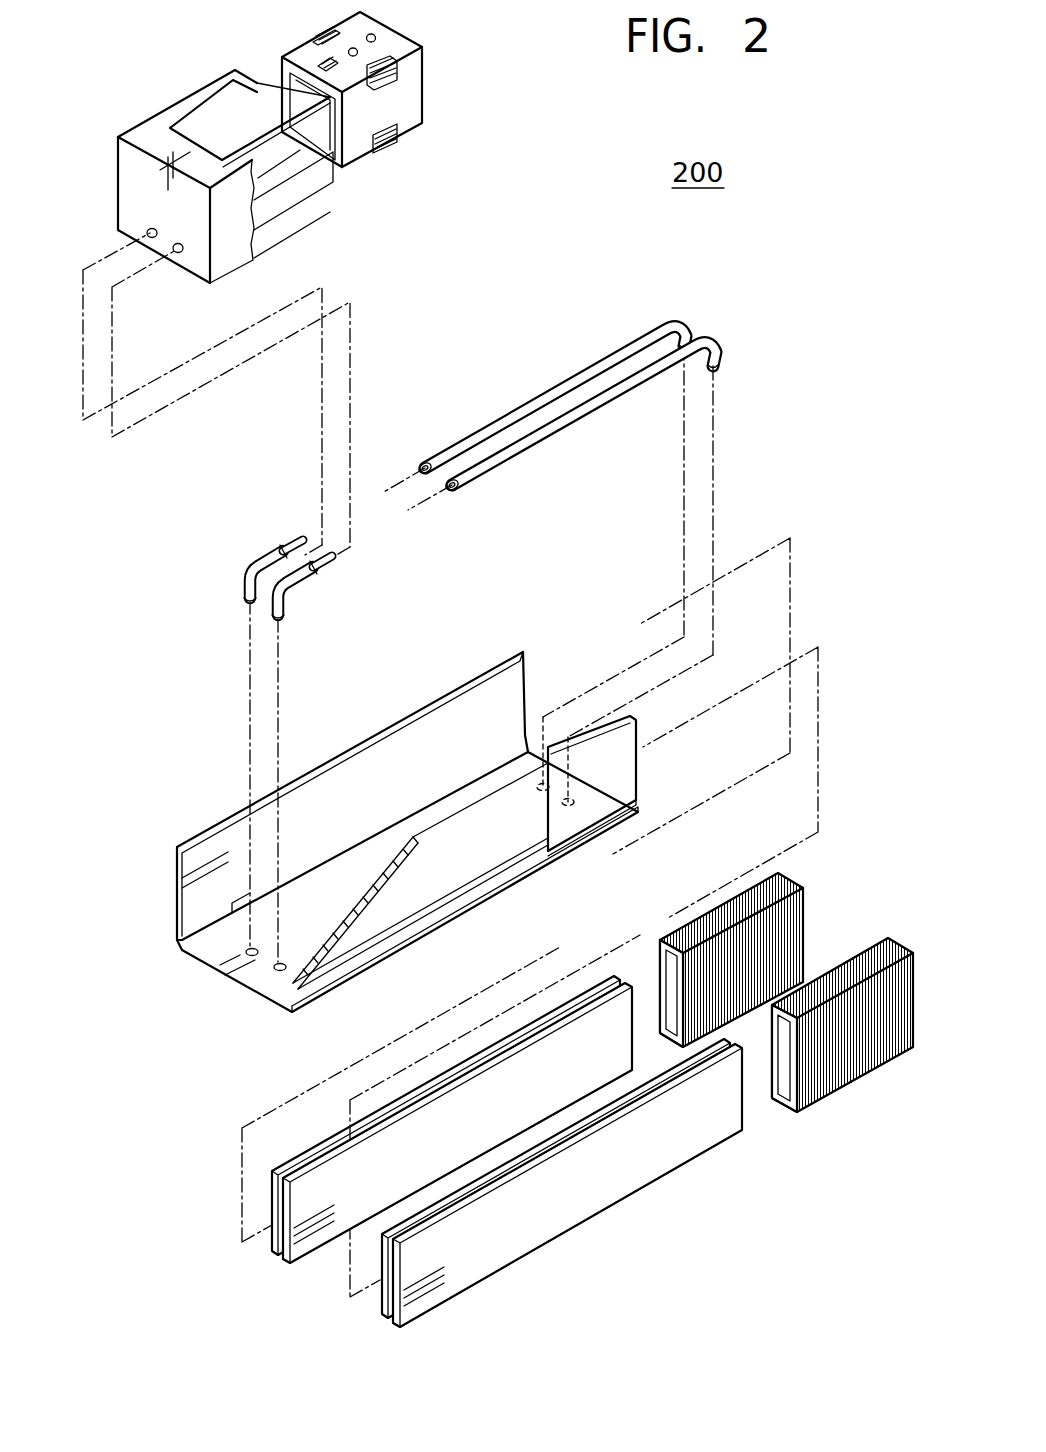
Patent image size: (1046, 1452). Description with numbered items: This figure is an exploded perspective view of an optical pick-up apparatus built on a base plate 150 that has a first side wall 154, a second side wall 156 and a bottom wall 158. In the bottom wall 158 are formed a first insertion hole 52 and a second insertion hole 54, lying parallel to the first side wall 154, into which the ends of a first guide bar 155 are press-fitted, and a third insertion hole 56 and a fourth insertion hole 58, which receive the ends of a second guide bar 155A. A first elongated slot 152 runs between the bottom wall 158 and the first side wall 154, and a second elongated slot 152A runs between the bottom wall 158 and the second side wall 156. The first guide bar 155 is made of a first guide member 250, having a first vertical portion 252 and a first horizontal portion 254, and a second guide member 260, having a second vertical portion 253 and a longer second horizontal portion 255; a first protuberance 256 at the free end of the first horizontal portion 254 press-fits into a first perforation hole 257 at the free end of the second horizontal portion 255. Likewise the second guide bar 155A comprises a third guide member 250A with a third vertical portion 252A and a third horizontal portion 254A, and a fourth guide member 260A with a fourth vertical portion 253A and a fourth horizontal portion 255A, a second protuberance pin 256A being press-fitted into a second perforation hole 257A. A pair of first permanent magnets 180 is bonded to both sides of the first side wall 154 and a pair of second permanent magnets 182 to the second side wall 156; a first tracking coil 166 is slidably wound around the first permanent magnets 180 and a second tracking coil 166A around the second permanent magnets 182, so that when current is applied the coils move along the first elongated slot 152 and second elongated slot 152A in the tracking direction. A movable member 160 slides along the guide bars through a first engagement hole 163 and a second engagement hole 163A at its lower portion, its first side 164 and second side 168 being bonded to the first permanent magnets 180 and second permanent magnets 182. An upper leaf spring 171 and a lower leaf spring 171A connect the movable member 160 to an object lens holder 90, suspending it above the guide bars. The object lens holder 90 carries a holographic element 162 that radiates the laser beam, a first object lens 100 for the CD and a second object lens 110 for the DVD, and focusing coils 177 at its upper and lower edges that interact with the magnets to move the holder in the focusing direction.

The object lens holder 90 is at (418, 104).
The first object lens 100 is at (358, 52).
The second object lens 110 is at (377, 38).
The holographic element 162 is at (324, 64).
The focusing coils 177 is at (392, 138).
The movable member 160 is at (215, 185).
The first side 164 is at (147, 110).
The upper leaf spring 171 is at (217, 130).
The lower leaf spring 171A is at (282, 172).
The second side 168 is at (238, 230).
The first engagement hole 163 is at (150, 233).
The second engagement hole 163A is at (178, 252).
The first guide bar 155 is at (410, 324).
The second guide bar 155A is at (639, 545).
The second guide member 260 is at (380, 343).
The fourth guide member 260A is at (655, 468).
The second vertical portion 253 is at (668, 335).
The fourth vertical portion 253A is at (690, 372).
The second horizontal portion 255 is at (535, 482).
The fourth horizontal portion 255A is at (563, 499).
The first perforation hole 257 is at (428, 460).
The second perforation hole 257A is at (468, 492).
The first guide member 250 is at (248, 488).
The third guide member 250A is at (417, 610).
The first vertical portion 252 is at (245, 588).
The third vertical portion 252A is at (282, 608).
The first horizontal portion 254 is at (262, 560).
The third horizontal portion 254A is at (298, 588).
The first protuberance 256 is at (290, 545).
The second protuberance pin 256A is at (326, 566).
The base plate 150 is at (414, 860).
The first elongated slot 152 is at (541, 745).
The second elongated slot 152A is at (634, 802).
The first side wall 154 is at (178, 848).
The second side wall 156 is at (430, 875).
The bottom wall 158 is at (185, 955).
The first insertion hole 52 is at (250, 955).
The second insertion hole 54 is at (545, 792).
The third insertion hole 56 is at (280, 972).
The fourth insertion hole 58 is at (574, 806).
The first tracking coil 166 is at (805, 935).
The second tracking coil 166A is at (840, 1092).
The first permanent magnets 180 is at (285, 1270).
The second permanent magnets 182 is at (573, 1180).